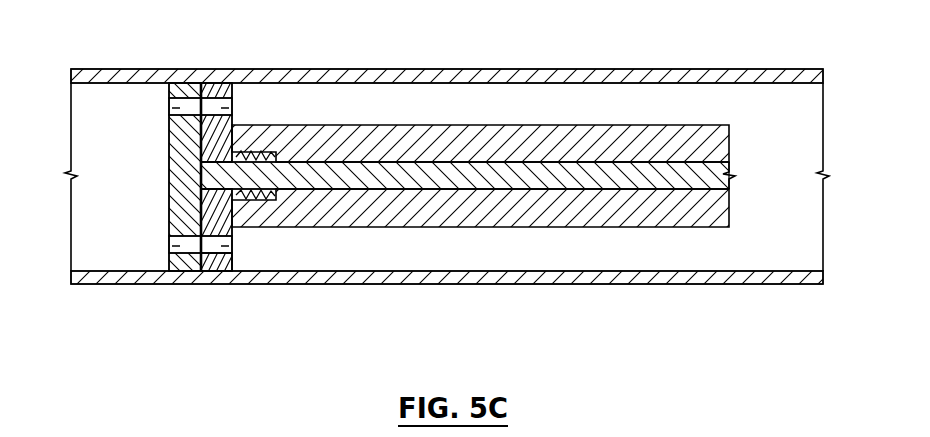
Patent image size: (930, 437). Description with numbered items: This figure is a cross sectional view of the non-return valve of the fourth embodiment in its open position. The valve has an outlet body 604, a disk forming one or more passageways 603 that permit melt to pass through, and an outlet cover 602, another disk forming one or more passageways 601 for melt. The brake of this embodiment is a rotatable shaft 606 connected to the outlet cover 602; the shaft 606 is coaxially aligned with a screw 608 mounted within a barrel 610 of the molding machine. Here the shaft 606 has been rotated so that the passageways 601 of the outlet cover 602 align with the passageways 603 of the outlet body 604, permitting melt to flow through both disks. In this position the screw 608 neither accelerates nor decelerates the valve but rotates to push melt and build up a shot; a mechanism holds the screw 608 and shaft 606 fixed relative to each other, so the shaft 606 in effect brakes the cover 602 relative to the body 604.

The passageways 601 is at (188, 246).
The outlet cover 602 is at (183, 263).
The passageways 603 is at (230, 248).
The outlet body 604 is at (213, 263).
The rotatable shaft 606 is at (465, 172).
The screw 608 is at (533, 207).
The barrel 610 is at (638, 278).